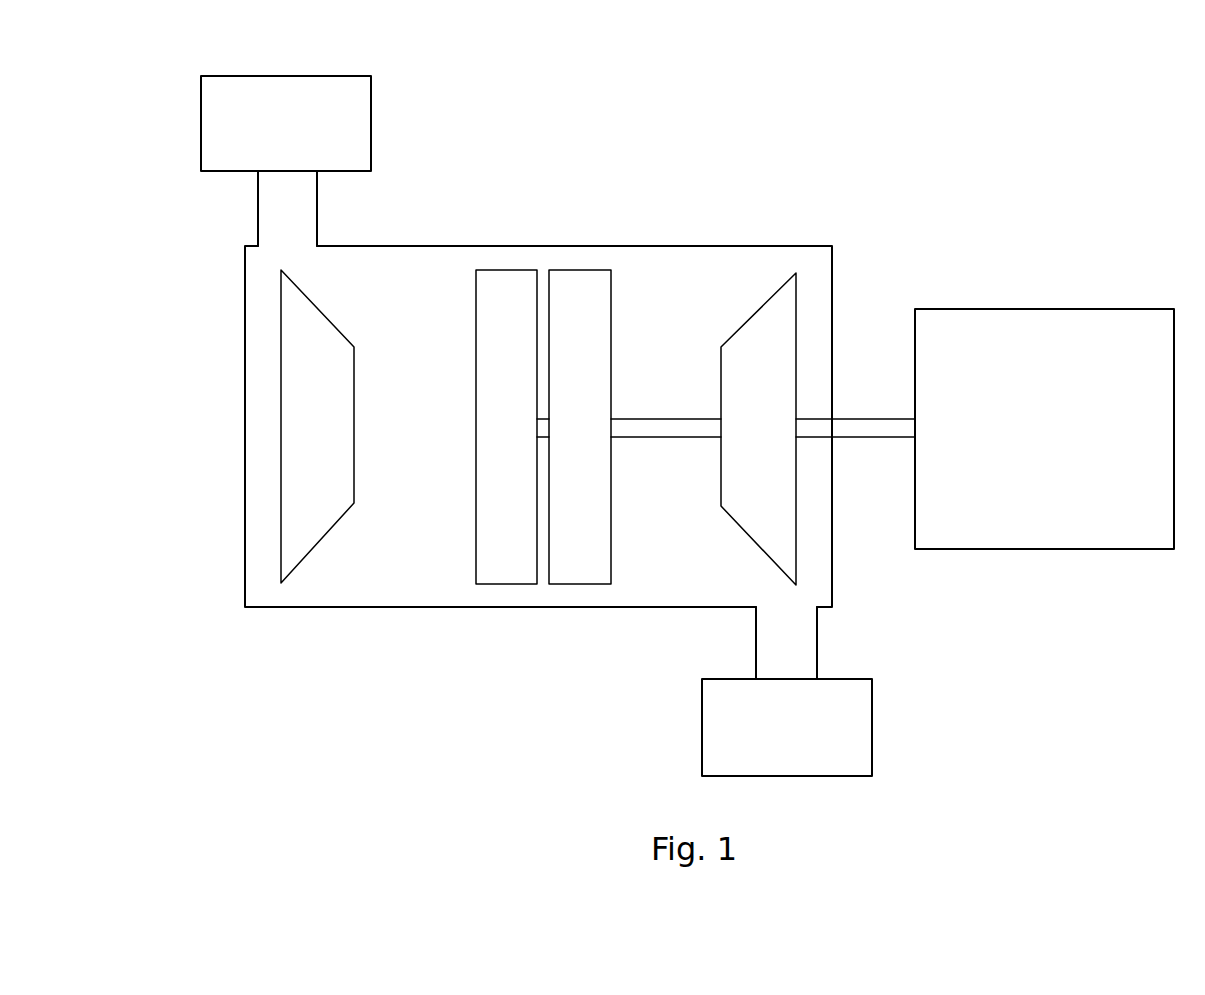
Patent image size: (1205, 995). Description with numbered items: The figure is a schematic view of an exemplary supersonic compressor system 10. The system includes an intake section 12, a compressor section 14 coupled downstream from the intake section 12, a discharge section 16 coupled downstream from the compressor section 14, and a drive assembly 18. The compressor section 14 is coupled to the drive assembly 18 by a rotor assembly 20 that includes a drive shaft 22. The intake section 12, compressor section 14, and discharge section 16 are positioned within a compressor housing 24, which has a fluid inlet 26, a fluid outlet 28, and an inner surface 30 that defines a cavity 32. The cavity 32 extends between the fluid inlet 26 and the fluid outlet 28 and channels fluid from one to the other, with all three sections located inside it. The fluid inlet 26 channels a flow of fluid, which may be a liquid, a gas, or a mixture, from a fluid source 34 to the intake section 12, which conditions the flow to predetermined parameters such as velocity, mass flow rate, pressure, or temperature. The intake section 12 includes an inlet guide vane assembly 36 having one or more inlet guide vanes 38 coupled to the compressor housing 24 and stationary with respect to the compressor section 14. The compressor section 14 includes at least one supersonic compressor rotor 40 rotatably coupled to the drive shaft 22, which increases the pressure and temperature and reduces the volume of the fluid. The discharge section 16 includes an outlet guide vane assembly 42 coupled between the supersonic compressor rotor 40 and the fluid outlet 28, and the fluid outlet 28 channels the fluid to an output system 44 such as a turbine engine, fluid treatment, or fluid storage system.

The supersonic compressor system 10 is at (789, 92).
The intake section 12 is at (365, 396).
The compressor section 14 is at (578, 393).
The discharge section 16 is at (774, 395).
The drive assembly 18 is at (1076, 262).
The rotor assembly 20 is at (854, 366).
The drive shaft 22 is at (642, 419).
The compressor housing 24 is at (538, 441).
The fluid inlet 26 is at (318, 222).
The fluid outlet 28 is at (818, 650).
The inner surface 30 is at (454, 607).
The cavity 32 is at (409, 565).
The fluid source 34 is at (295, 75).
The inlet guide vane assembly 36 is at (365, 419).
The inlet guide vanes 38 is at (338, 328).
The supersonic compressor rotor 40 is at (500, 269).
The outlet guide vane assembly 42 is at (760, 305).
The output system 44 is at (873, 727).